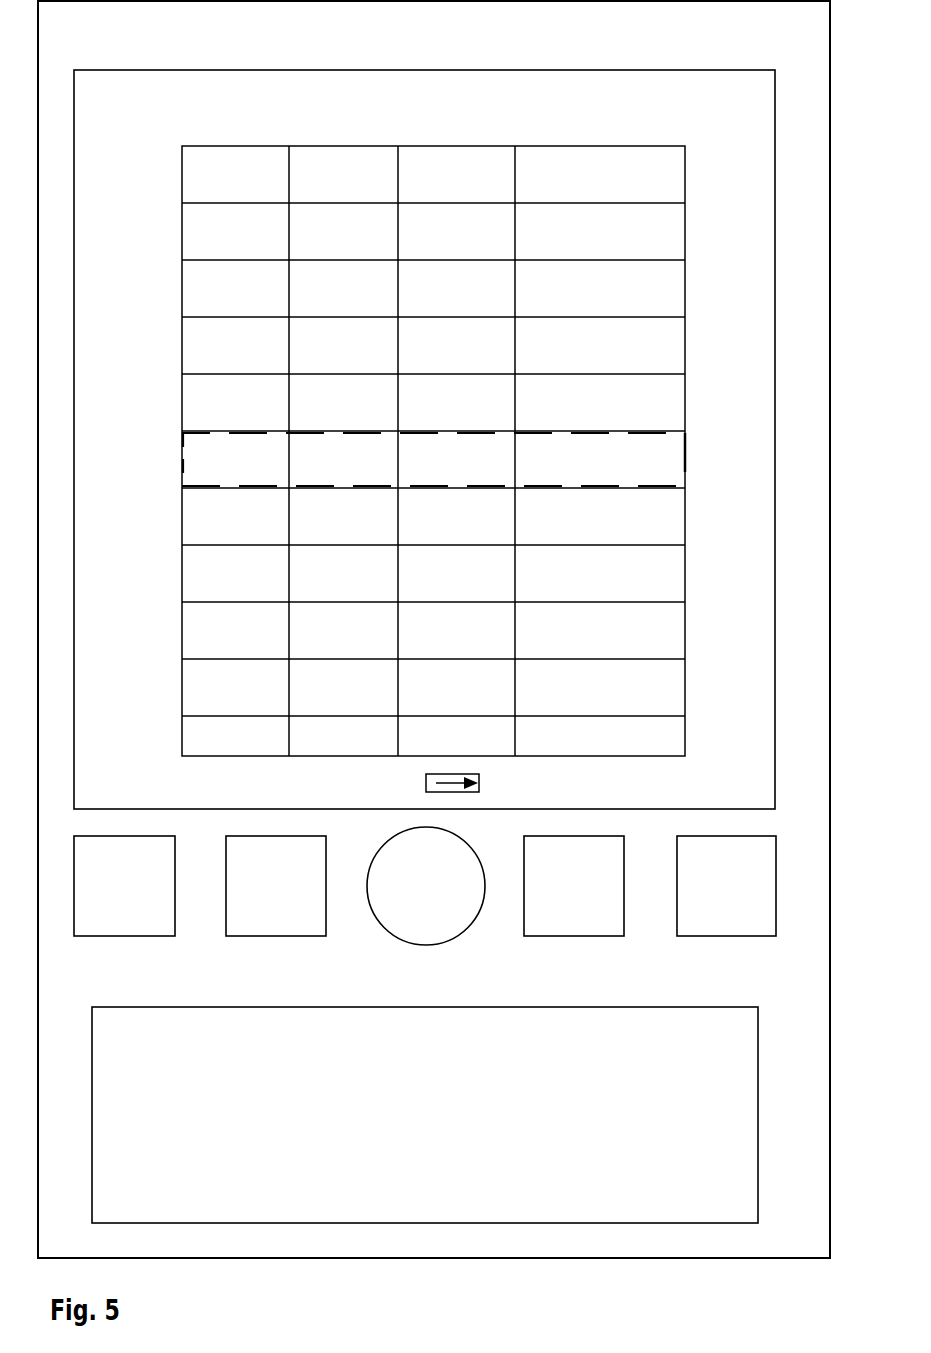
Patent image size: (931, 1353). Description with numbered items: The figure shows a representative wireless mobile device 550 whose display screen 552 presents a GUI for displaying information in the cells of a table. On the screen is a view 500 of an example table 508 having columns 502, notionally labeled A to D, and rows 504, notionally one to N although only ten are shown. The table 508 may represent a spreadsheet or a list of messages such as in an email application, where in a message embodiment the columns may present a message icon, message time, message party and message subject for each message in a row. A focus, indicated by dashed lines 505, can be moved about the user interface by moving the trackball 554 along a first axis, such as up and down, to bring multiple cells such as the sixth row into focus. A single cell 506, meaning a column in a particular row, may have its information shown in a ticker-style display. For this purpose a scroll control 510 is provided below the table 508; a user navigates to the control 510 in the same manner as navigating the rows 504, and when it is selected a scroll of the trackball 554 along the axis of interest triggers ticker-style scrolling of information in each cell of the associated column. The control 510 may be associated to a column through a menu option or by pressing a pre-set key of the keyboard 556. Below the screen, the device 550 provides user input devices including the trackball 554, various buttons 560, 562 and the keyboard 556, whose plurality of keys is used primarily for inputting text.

The view 500 is at (222, 62).
The columns 502 is at (485, 121).
The rows 504 is at (130, 251).
The dashed lines 505 is at (686, 450).
The cell 506 is at (472, 474).
The table 508 is at (174, 135).
The scroll control 510 is at (479, 774).
The wireless mobile device 550 is at (814, 1235).
The display screen 552 is at (743, 766).
The trackball 554 is at (446, 899).
The keyboard 556 is at (472, 1151).
The button 560 is at (598, 910).
The button 562 is at (292, 899).